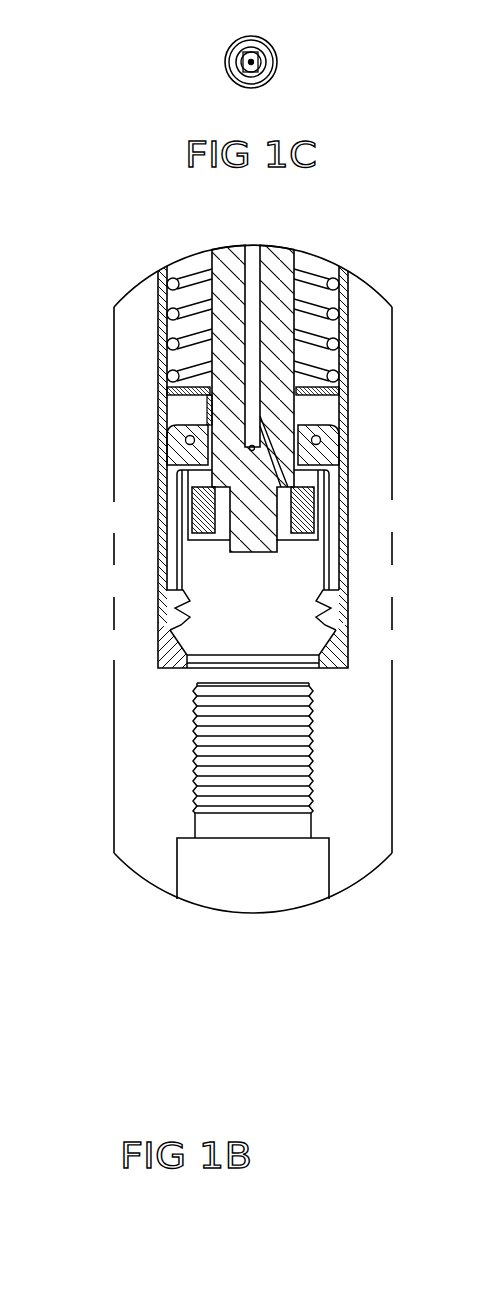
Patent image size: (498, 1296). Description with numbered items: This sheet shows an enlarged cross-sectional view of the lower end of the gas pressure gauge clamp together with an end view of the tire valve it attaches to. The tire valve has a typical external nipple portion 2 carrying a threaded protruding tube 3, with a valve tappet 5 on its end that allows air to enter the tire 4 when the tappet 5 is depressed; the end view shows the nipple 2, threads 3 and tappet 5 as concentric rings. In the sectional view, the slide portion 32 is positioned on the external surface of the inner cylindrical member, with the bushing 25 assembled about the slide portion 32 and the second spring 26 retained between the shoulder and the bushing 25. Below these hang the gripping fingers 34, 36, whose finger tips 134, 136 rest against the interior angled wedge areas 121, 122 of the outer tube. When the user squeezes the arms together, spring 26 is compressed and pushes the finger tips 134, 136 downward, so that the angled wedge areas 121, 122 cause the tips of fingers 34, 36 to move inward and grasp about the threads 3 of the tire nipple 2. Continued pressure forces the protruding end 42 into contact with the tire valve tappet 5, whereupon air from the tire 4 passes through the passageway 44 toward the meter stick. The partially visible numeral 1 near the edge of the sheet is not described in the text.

In FIG. 1B, the nozzle assembly 1 is at (306, 579).
In FIG. 1C, the tire nipple 2 is at (233, 43).
In FIG. 1B, the tire nipple 2 is at (332, 868).
In FIG. 1C, the threaded protruding tube 3 is at (230, 72).
In FIG. 1B, the threaded protruding tube 3 is at (312, 775).
In FIG. 1B, the tire 4 is at (497, 1053).
In FIG. 1C, the valve tappet 5 is at (258, 53).
In FIG. 1B, the bushing 25 is at (167, 382).
In FIG. 1B, the second spring 26 is at (310, 277).
In FIG. 1B, the slide portion 32 is at (210, 258).
In FIG. 1B, the gripping finger 34 is at (335, 522).
In FIG. 1B, the gripping finger 36 is at (172, 522).
In FIG. 1B, the protruding end 42 is at (230, 552).
In FIG. 1B, the passageway 44 is at (242, 368).
In FIG. 1B, the interior angled wedge area 121 is at (160, 658).
In FIG. 1B, the interior angled wedge area 122 is at (340, 655).
In FIG. 1B, the finger tip 134 is at (340, 620).
In FIG. 1B, the finger tip 136 is at (172, 620).